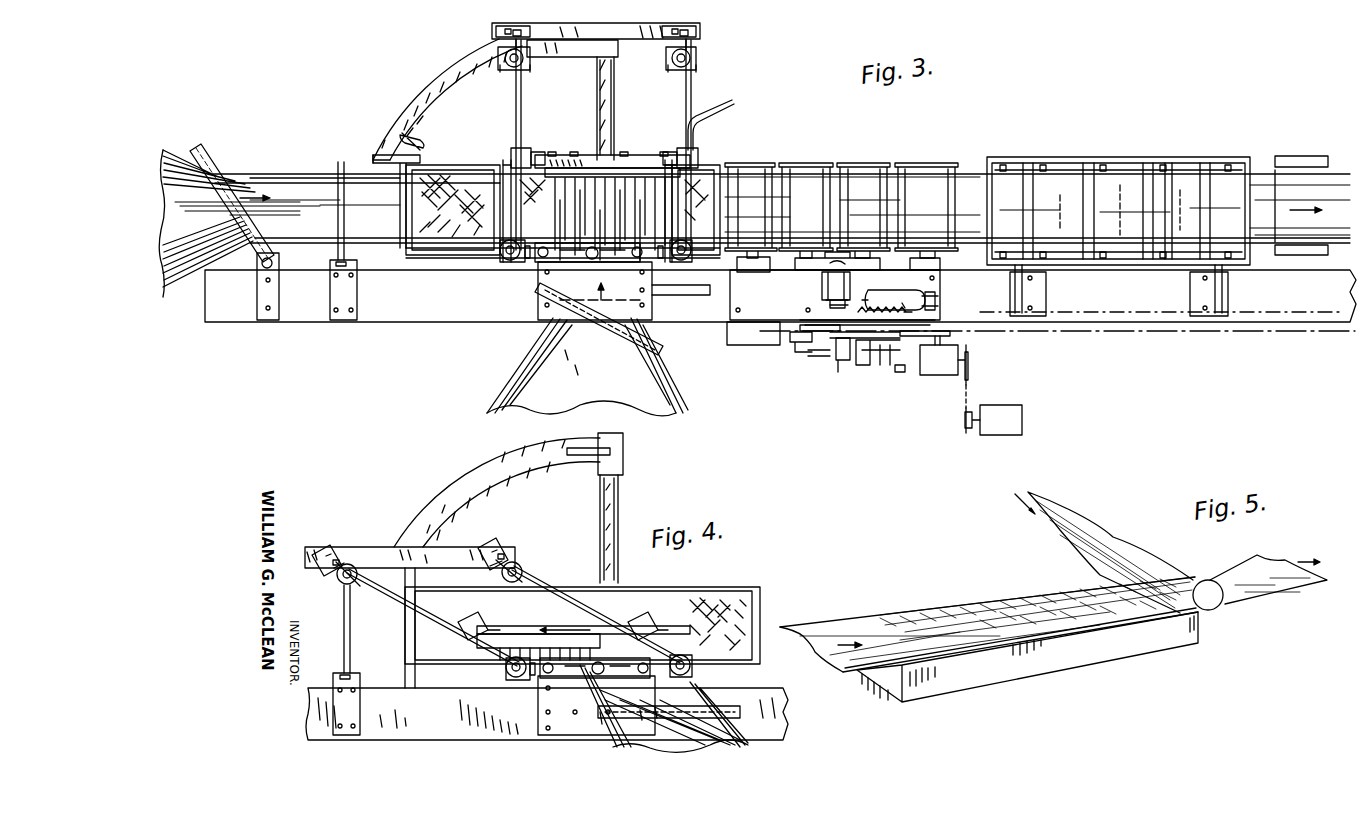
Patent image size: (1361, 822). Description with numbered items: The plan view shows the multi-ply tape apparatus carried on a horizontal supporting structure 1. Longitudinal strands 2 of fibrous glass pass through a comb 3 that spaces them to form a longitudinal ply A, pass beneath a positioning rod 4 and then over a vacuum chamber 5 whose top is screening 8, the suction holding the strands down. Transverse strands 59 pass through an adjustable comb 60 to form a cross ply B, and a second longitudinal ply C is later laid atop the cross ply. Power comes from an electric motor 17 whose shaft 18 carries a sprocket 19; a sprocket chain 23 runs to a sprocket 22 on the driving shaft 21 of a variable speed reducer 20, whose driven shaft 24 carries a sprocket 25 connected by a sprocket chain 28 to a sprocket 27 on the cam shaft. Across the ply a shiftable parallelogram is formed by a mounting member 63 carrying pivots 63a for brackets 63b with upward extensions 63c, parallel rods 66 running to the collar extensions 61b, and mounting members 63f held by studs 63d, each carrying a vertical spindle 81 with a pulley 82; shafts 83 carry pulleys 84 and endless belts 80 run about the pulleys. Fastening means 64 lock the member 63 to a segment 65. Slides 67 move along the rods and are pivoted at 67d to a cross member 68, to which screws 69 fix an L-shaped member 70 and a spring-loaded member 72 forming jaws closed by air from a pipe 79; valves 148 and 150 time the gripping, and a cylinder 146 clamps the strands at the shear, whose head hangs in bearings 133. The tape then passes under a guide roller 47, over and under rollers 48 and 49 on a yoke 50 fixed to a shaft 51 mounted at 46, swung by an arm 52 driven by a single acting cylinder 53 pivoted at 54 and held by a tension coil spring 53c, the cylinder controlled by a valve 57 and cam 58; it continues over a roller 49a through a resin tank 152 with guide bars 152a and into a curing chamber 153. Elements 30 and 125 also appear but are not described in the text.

In FIG. 3, the supporting structure 1 is at (312, 312).
In FIG. 4, the supporting structure 1 is at (392, 680).
In FIG. 3, the longitudinal strands 2 is at (190, 280).
In FIG. 3, the comb 3 is at (212, 168).
In FIG. 3, the positioning rod 4 is at (345, 232).
In FIG. 3, the vacuum chamber 5 is at (445, 254).
In FIG. 4, the vacuum chamber 5 is at (452, 666).
In FIG. 5, the vacuum chamber 5 is at (1080, 652).
In FIG. 3, the screening 8 is at (470, 255).
In FIG. 4, the screening 8 is at (730, 605).
In FIG. 3, the electric motor 17 is at (1005, 412).
In FIG. 3, the motor shaft 18 is at (965, 416).
In FIG. 3, the sprocket 19 is at (964, 425).
In FIG. 3, the speed reducer with variable speed adjustment 20 is at (948, 365).
In FIG. 3, the driving shaft 21 is at (970, 372).
In FIG. 3, the sprocket 22 is at (968, 358).
In FIG. 3, the sprocket chain 23 is at (968, 396).
In FIG. 3, the driven shaft 24 is at (942, 342).
In FIG. 3, the sprocket 25 is at (947, 330).
In FIG. 3, the sprocket 27 is at (818, 326).
In FIG. 3, the sprocket chain 28 is at (930, 332).
In FIG. 3, the center line 30 is at (1172, 332).
In FIG. 3, the shaft mounting 46 is at (848, 284).
In FIG. 3, the guide roller 47 is at (760, 170).
In FIG. 5, the guide roller 47 is at (1178, 572).
In FIG. 3, the roller 48 is at (814, 170).
In FIG. 3, the roller 49 is at (862, 172).
In FIG. 3, the roller 49a is at (938, 170).
In FIG. 3, the yoke 50 is at (850, 262).
In FIG. 3, the shaft 51 is at (828, 268).
In FIG. 3, the arm 52 is at (832, 302).
In FIG. 3, the single acting cylinder 53 is at (884, 298).
In FIG. 3, the tension coil spring 53c is at (905, 305).
In FIG. 3, the cylinder pivot 54 is at (936, 296).
In FIG. 3, the valve 57 is at (812, 352).
In FIG. 3, the cam 58 is at (830, 358).
In FIG. 3, the transverse strands 59 is at (526, 365).
In FIG. 4, the transverse strands 59 is at (617, 746).
In FIG. 3, the comb 60 is at (640, 343).
In FIG. 4, the comb 60 is at (725, 700).
In FIG. 3, the upward extension 61b is at (527, 258).
In FIG. 4, the upward extension 61b is at (533, 678).
In FIG. 3, the mounting member 63 is at (644, 22).
In FIG. 4, the mounting member 63 is at (462, 556).
In FIG. 3, the pivots 63a is at (688, 30).
In FIG. 4, the pivots 63a is at (322, 552).
In FIG. 3, the brackets 63b is at (504, 30).
In FIG. 4, the brackets 63b is at (326, 566).
In FIG. 3, the upward extension 63c is at (516, 32).
In FIG. 4, the upward extension 63c is at (338, 556).
In FIG. 3, the studs 63d is at (507, 46).
In FIG. 4, the studs 63d is at (335, 582).
In FIG. 3, the mounting member 63f is at (526, 58).
In FIG. 4, the mounting member 63f is at (352, 565).
In FIG. 3, the fastening means 64 is at (596, 27).
In FIG. 4, the fastening means 64 is at (405, 545).
In FIG. 3, the segment 65 is at (402, 112).
In FIG. 4, the segment 65 is at (487, 465).
In FIG. 3, the parallel rods 66 is at (522, 100).
In FIG. 4, the parallel rods 66 is at (455, 618).
In FIG. 3, the slide 67 is at (522, 148).
In FIG. 4, the slide 67 is at (470, 622).
In FIG. 3, the pivotal connection 67d is at (533, 158).
In FIG. 4, the pivotal connection 67d is at (466, 638).
In FIG. 3, the cross member or puller 68 is at (632, 156).
In FIG. 4, the cross member or puller 68 is at (518, 634).
In FIG. 3, the screws 69 is at (578, 153).
In FIG. 3, the L-shaped member 70 is at (594, 155).
In FIG. 4, the L-shaped member 70 is at (540, 625).
In FIG. 3, the member 72 is at (552, 177).
In FIG. 4, the member 72 is at (510, 640).
In FIG. 3, the pipe 79 is at (725, 106).
In FIG. 3, the endless belts 80 is at (503, 180).
In FIG. 4, the endless belts 80 is at (395, 608).
In FIG. 3, the vertical spindle 81 is at (503, 56).
In FIG. 4, the vertical spindle 81 is at (352, 586).
In FIG. 3, the pulley 82 is at (504, 68).
In FIG. 4, the pulley 82 is at (358, 576).
In FIG. 3, the shaft 83 is at (503, 254).
In FIG. 4, the shaft 83 is at (507, 668).
In FIG. 3, the pulley 84 is at (506, 262).
In FIG. 4, the pulley 84 is at (512, 680).
In FIG. 3, the housing 125 is at (790, 348).
In FIG. 3, the bearings 133 is at (535, 250).
In FIG. 4, the bearings 133 is at (595, 668).
In FIG. 3, the cylinder 146 is at (600, 262).
In FIG. 4, the cylinder 146 is at (592, 676).
In FIG. 3, the valve 148 is at (888, 366).
In FIG. 3, the valve 150 is at (843, 372).
In FIG. 3, the tank 152 is at (1108, 158).
In FIG. 3, the guide bars 152a is at (1225, 145).
In FIG. 3, the heating or curing chamber 153 is at (1316, 158).
In FIG. 3, the longitudinal ply A is at (312, 190).
In FIG. 4, the longitudinal ply A is at (350, 670).
In FIG. 5, the longitudinal ply A is at (902, 614).
In FIG. 3, the cross ply B is at (625, 300).
In FIG. 4, the cross ply B is at (625, 692).
In FIG. 5, the cross ply B is at (1032, 596).
In FIG. 5, the second longitudinal ply C is at (1098, 525).